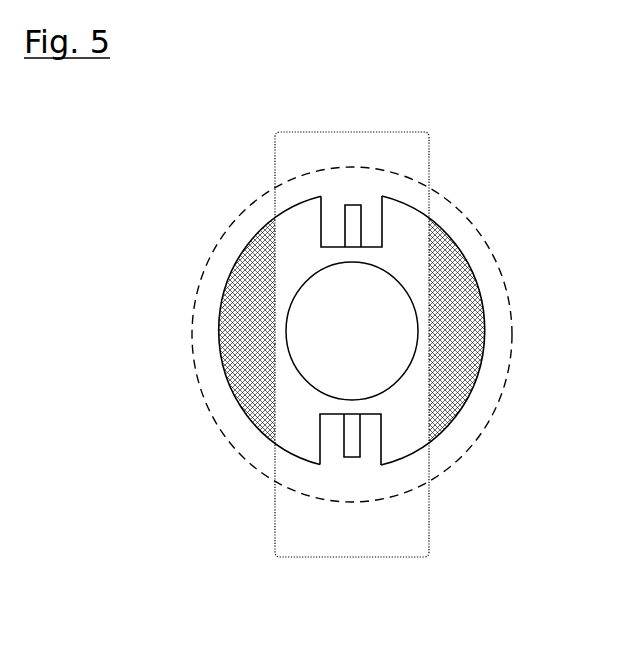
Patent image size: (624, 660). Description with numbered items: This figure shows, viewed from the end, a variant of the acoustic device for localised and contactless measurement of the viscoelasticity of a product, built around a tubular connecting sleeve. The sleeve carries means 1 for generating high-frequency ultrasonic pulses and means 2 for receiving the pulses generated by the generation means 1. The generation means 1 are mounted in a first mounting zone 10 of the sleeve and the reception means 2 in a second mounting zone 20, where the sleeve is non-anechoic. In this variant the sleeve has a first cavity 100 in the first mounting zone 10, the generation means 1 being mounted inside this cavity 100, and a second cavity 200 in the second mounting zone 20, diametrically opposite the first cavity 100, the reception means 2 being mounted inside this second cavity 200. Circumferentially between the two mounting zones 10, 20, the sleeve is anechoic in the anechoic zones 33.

The means for generating high-frequency ultrasonic pulses 1 is at (336, 222).
The means for receiving high-frequency ultrasonic pulses 2 is at (376, 438).
The first mounting zone 10 is at (352, 132).
The second mounting zone 20 is at (352, 557).
The anechoic zones 33 is at (220, 293).
The first cavity 100 is at (379, 247).
The second cavity 200 is at (336, 414).